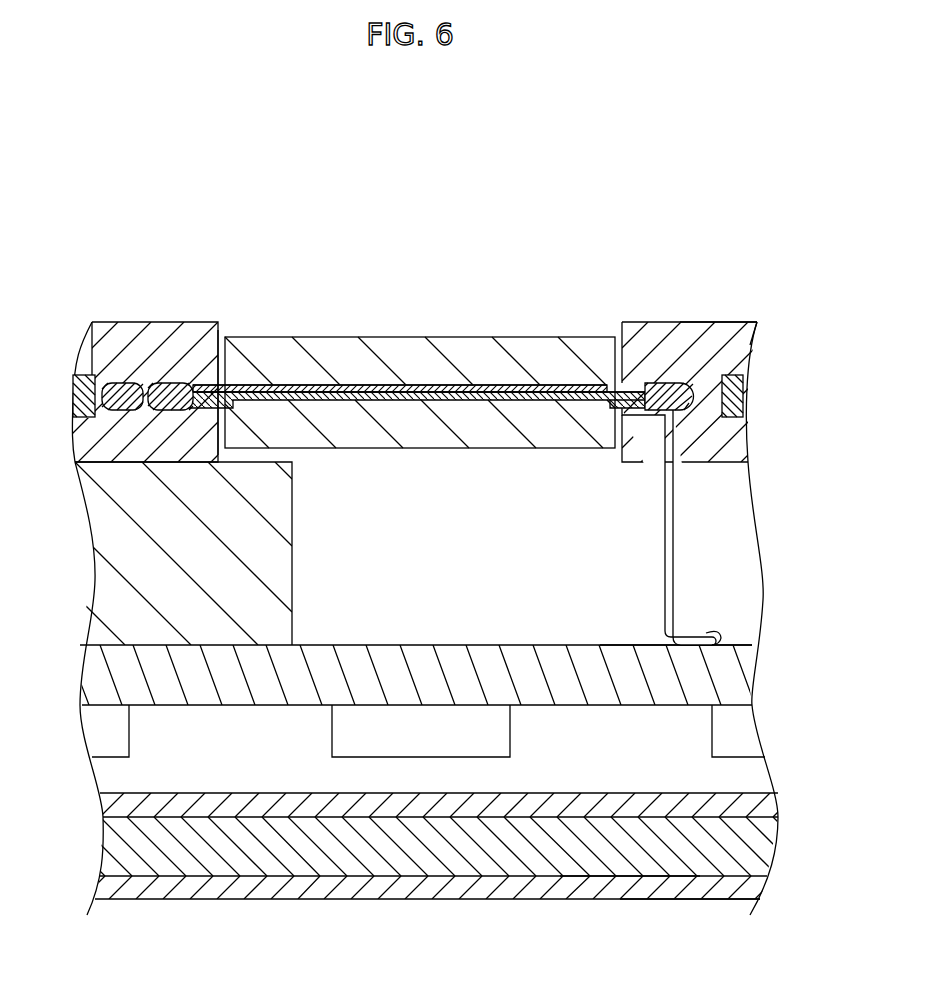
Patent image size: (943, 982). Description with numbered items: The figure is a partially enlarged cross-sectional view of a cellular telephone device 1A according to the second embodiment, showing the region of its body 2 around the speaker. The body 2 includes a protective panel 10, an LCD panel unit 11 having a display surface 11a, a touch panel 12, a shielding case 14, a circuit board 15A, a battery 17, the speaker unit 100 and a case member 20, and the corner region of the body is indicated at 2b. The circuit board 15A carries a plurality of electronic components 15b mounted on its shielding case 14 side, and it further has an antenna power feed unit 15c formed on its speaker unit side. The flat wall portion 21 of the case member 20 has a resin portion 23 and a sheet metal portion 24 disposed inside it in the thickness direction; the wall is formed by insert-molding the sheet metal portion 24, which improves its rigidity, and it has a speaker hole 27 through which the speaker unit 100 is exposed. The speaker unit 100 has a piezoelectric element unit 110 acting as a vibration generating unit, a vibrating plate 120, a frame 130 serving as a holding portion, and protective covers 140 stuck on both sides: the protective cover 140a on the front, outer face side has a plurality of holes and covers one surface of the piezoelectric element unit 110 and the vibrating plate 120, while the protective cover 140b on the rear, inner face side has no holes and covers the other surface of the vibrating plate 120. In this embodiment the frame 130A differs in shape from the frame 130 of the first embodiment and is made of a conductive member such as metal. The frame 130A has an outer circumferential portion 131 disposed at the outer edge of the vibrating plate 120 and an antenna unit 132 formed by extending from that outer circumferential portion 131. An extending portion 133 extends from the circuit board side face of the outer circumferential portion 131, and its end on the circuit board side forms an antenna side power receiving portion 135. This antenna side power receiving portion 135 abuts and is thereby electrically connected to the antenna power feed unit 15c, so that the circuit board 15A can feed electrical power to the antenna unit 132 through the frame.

The cellular telephone device 1A is at (627, 98).
The body 2 is at (635, 240).
The corner portion of frame 2b is at (756, 323).
The protective panel 10 is at (703, 885).
The LCD panel unit 11 is at (752, 860).
The display surface 11a is at (632, 878).
The touch panel 12 is at (740, 879).
The shielding case 14 is at (753, 800).
The circuit board 15A is at (727, 688).
The electronic components 15b is at (495, 740).
The antenna power feed unit 15c is at (697, 652).
The battery 17 is at (292, 568).
The case member 20 is at (695, 335).
The flat wall portion 21 is at (730, 333).
The resin portion 23 is at (138, 362).
The sheet metal portion 24 is at (88, 375).
The speaker hole 27 is at (190, 385).
The speaker unit 100 is at (525, 320).
The piezoelectric element unit 110 is at (477, 390).
The vibrating plate 120 is at (410, 388).
The frame 130 is at (657, 390).
The frame 130A is at (105, 248).
The outer circumferential portion 131 is at (176, 392).
The antenna unit 132 is at (133, 395).
The extending portion 133 is at (665, 543).
The antenna side power receiving portion 135 is at (695, 640).
The protective covers 140 is at (243, 248).
The protective cover 140a is at (277, 355).
The protective cover 140b is at (285, 430).